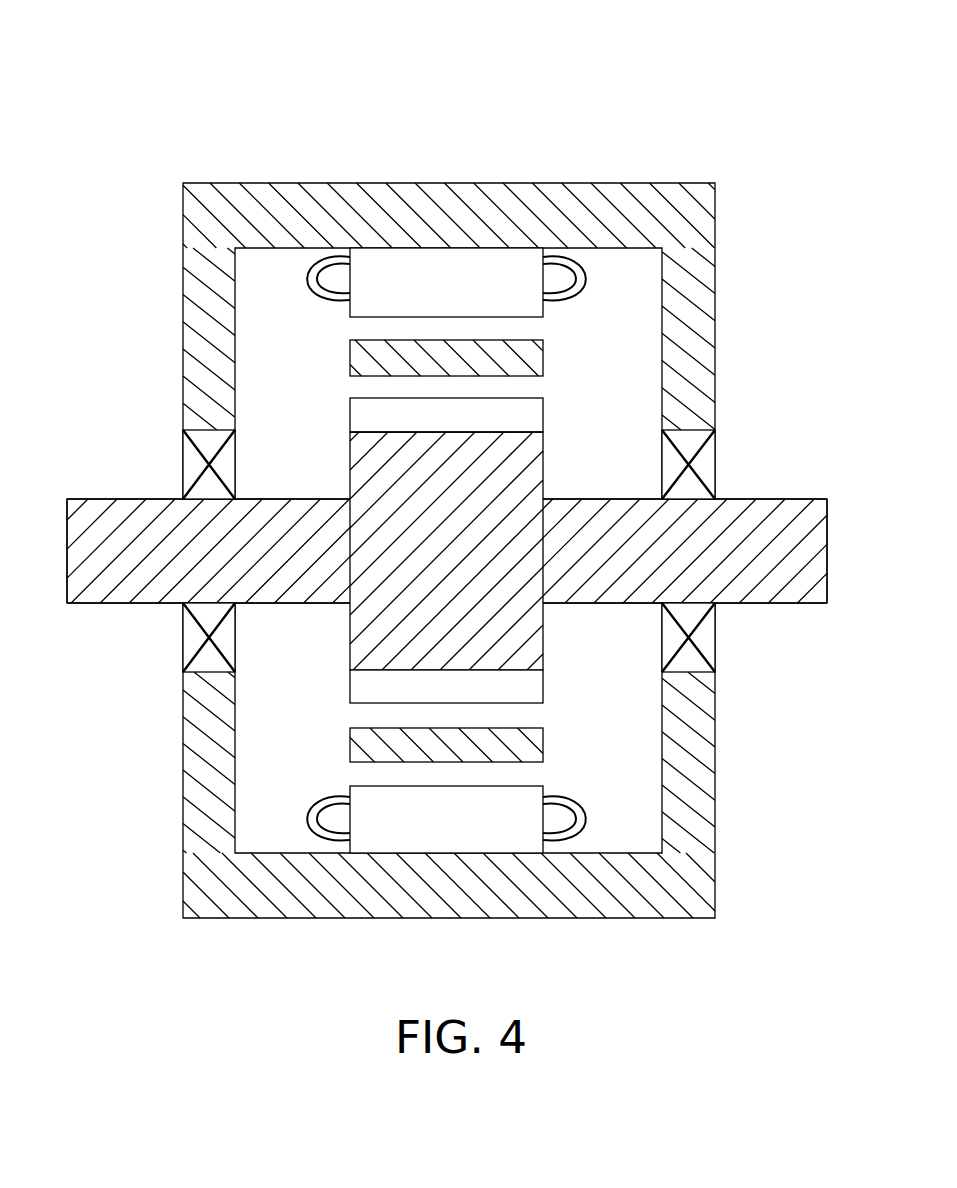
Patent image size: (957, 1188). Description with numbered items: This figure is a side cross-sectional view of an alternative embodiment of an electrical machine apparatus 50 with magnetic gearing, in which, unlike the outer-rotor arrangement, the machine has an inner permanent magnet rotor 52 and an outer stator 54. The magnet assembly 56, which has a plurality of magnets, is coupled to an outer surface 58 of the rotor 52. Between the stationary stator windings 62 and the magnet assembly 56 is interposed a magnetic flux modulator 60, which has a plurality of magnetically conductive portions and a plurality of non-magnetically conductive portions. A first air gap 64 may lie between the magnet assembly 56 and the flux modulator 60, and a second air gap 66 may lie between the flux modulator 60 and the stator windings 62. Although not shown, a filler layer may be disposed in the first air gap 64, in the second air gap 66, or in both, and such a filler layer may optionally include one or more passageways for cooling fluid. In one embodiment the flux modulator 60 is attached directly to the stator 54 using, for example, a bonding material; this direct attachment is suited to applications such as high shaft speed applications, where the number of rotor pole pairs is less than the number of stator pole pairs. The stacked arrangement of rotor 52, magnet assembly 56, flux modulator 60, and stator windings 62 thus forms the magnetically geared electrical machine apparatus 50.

The electrical machine apparatus 50 is at (482, 470).
The inner permanent magnet rotor 52 is at (535, 450).
The outer stator 54 is at (443, 301).
The magnet assembly 56 is at (363, 422).
The outer surface 58 is at (498, 433).
The magnetic flux modulator 60 is at (363, 359).
The stator windings 62 is at (590, 277).
The first air gap 64 is at (535, 387).
The second air gap 66 is at (535, 327).